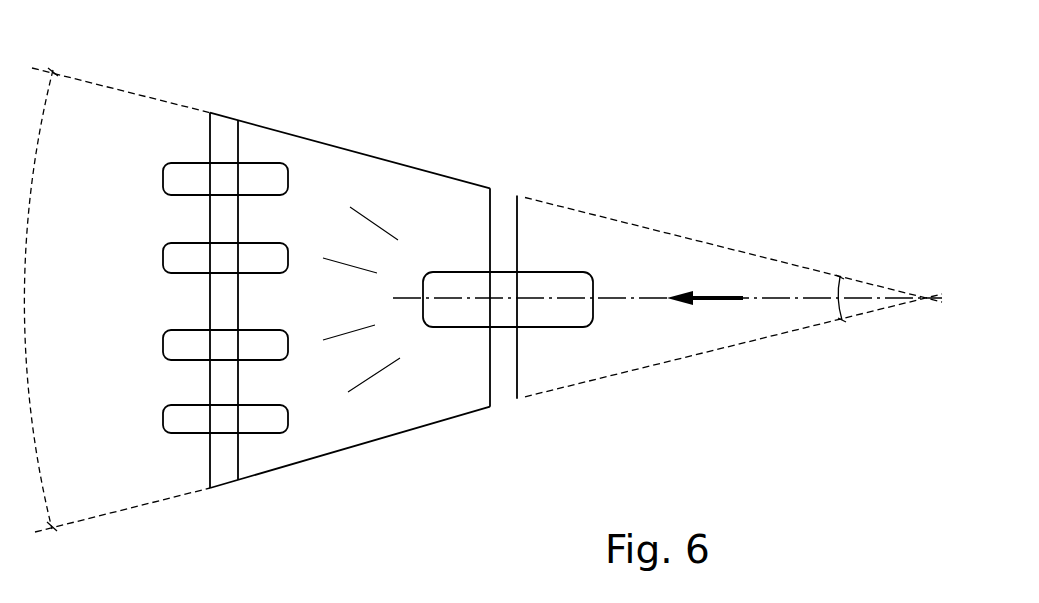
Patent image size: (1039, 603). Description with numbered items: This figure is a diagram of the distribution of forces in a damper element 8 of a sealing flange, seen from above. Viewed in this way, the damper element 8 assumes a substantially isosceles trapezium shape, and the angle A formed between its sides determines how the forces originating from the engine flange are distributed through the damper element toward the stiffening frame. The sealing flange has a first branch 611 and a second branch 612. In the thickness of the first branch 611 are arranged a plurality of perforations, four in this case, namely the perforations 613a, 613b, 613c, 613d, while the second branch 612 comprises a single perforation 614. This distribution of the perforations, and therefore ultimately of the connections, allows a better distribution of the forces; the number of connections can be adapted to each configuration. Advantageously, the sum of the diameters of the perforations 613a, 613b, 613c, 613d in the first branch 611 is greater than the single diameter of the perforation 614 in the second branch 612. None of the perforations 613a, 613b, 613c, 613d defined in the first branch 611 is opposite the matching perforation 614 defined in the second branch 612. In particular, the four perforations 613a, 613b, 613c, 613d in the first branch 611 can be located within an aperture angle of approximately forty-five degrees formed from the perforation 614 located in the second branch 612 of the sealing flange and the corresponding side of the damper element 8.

The damper element 8 is at (413, 436).
The first branch 611 is at (204, 468).
The second branch 612 is at (526, 386).
The perforation 613a is at (227, 180).
The perforation 613b is at (220, 260).
The perforation 613c is at (220, 347).
The perforation 613d is at (220, 420).
The perforation 614 is at (500, 298).
The angle A is at (830, 298).